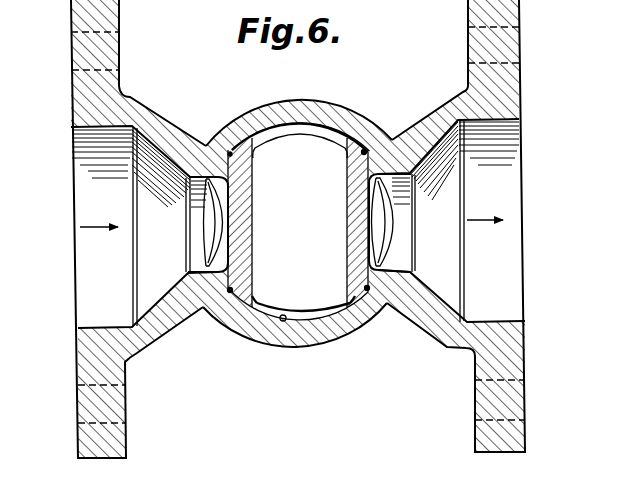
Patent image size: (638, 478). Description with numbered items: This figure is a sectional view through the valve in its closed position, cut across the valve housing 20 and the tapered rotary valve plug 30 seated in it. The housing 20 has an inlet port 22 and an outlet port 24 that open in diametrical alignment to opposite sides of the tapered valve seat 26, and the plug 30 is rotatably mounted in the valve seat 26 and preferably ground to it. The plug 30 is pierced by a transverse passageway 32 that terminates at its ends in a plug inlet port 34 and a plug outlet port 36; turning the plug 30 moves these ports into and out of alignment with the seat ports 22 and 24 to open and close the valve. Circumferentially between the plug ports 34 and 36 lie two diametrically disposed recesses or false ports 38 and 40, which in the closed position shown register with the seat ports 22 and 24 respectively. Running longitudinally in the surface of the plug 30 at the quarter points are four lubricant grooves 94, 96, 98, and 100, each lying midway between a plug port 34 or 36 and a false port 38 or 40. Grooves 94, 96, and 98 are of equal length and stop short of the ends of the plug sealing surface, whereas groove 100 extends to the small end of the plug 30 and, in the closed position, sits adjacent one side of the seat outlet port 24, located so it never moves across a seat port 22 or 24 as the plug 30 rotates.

The valve housing 20 is at (437, 338).
The inlet port 22 is at (217, 272).
The outlet port 24 is at (398, 270).
The tapered valve seat 26 is at (282, 322).
The tapered rotary valve plug 30 is at (362, 314).
The transverse passageway 32 is at (308, 158).
The inlet port 34 is at (264, 116).
The outlet port 36 is at (329, 308).
The false port 38 is at (228, 213).
The false port 40 is at (370, 217).
The lubricant groove 94 is at (368, 289).
The lubricant groove 96 is at (230, 291).
The lubricant groove 98 is at (229, 153).
The lubricant groove 100 is at (365, 151).